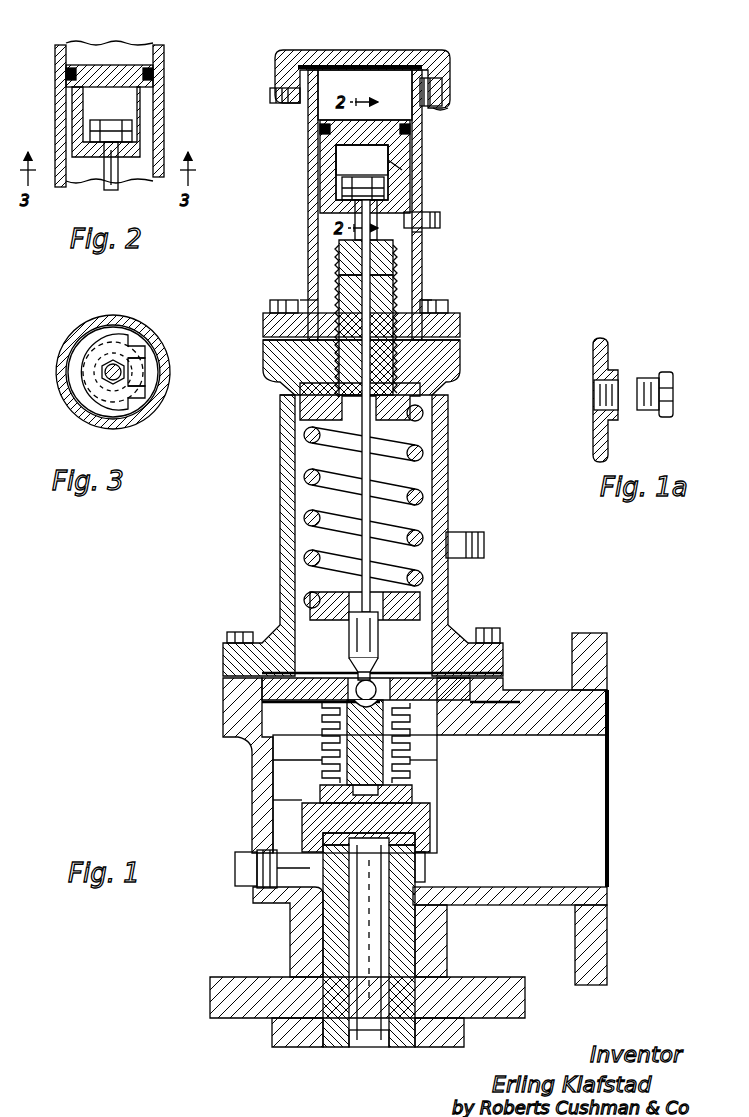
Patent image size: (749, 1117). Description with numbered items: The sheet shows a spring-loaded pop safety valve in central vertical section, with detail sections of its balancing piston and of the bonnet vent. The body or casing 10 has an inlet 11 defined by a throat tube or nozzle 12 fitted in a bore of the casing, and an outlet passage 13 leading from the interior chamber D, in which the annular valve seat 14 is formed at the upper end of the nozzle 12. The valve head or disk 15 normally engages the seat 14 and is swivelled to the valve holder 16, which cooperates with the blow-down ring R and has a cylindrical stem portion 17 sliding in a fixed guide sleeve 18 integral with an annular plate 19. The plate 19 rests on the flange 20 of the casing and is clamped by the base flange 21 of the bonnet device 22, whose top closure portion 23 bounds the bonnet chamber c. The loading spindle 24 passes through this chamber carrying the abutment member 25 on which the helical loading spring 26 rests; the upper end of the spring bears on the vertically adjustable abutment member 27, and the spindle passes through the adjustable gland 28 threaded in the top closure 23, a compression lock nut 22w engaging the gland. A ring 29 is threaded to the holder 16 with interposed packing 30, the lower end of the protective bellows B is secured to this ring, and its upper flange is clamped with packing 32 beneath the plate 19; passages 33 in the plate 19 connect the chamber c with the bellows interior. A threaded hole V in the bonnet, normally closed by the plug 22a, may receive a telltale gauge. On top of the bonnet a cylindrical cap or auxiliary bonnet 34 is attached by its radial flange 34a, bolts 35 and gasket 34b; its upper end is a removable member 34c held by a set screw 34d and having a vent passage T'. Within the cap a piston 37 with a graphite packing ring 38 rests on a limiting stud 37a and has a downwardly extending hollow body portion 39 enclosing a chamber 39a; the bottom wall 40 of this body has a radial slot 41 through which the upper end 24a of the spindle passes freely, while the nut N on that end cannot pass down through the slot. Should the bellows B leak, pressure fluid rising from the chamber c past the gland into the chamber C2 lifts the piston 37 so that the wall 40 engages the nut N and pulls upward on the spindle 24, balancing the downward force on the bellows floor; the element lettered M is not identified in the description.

In FIG. 1, the removable member 34c is at (392, 52).
In FIG. 1, the vent passage T' is at (458, 105).
In FIG. 1, the set screw 34d is at (274, 98).
In FIG. 1, the cylindrical cap 34 is at (310, 232).
In FIG. 3, the cylindrical cap 34 is at (60, 362).
In FIG. 1, the piston 37 is at (384, 112).
In FIG. 1, the packing ring 38 is at (318, 134).
In FIG. 1, the segmental hollow body portion 39 is at (388, 156).
In FIG. 2, the segmental hollow body portion 39 is at (80, 118).
In FIG. 3, the segmental hollow body portion 39 is at (88, 350).
In FIG. 1, the chamber 39a is at (402, 172).
In FIG. 1, the bottom wall 40 is at (394, 190).
In FIG. 2, the bottom wall 40 is at (92, 158).
In FIG. 3, the bottom wall 40 is at (118, 344).
In FIG. 1, the upper end of loading spindle 24a is at (358, 684).
In FIG. 2, the upper end of loading spindle 24a is at (120, 120).
In FIG. 1, the nut N is at (345, 198).
In FIG. 3, the nut N is at (126, 382).
In FIG. 1, the limiting stud 37a is at (440, 220).
In FIG. 1, the chamber in cap C2 is at (422, 232).
In FIG. 1, the gland 28 is at (395, 272).
In FIG. 1, the adjustable abutment member 27 is at (398, 356).
In FIG. 1, the bolts 35 is at (420, 302).
In FIG. 1, the radial flange 34a is at (465, 322).
In FIG. 1, the compression lock nut 22w is at (322, 304).
In FIG. 1, the gasket 34b is at (300, 346).
In FIG. 1, the top closure portion 23 is at (300, 385).
In FIG. 1, the bonnet device 22 is at (450, 504).
In FIG. 1, the valve loading spindle 24 is at (422, 412).
In FIG. 1, the helical loading spring 26 is at (420, 492).
In FIG. 1, the abutment member 25 is at (424, 598).
In FIG. 1, the bonnet chamber c is at (382, 642).
In FIG. 1, the threaded plug 22a is at (478, 540).
In FIG. 1A, the threaded plug 22a is at (652, 380).
In FIG. 1, the passages 33 is at (295, 660).
In FIG. 1, the annular plate 19 is at (402, 692).
In FIG. 1, the flange 20 is at (230, 696).
In FIG. 1, the base flange 21 is at (508, 650).
In FIG. 1, the outlet passage 13 is at (596, 796).
In FIG. 1, the packing 32 is at (305, 720).
In FIG. 1, the guide sleeve 18 is at (420, 766).
In FIG. 1, the protective bellows B is at (300, 752).
In FIG. 1, the chamber M is at (398, 762).
In FIG. 1, the cylindrical stem portion 17 is at (340, 762).
In FIG. 1, the ring 29 is at (420, 792).
In FIG. 1, the valve holder 16 is at (432, 806).
In FIG. 1, the valve head 15 is at (440, 822).
In FIG. 1, the annular valve seat 14 is at (430, 832).
In FIG. 1, the packing 30 is at (305, 798).
In FIG. 1, the interior chamber D is at (290, 828).
In FIG. 1, the blow-down ring R is at (430, 862).
In FIG. 1, the valve casing 10 is at (292, 926).
In FIG. 1, the throat tube 12 is at (328, 1018).
In FIG. 1, the inlet 11 is at (382, 1036).
In FIG. 3, the radial slot 41 is at (136, 372).
In FIG. 1A, the threaded hole V is at (590, 397).